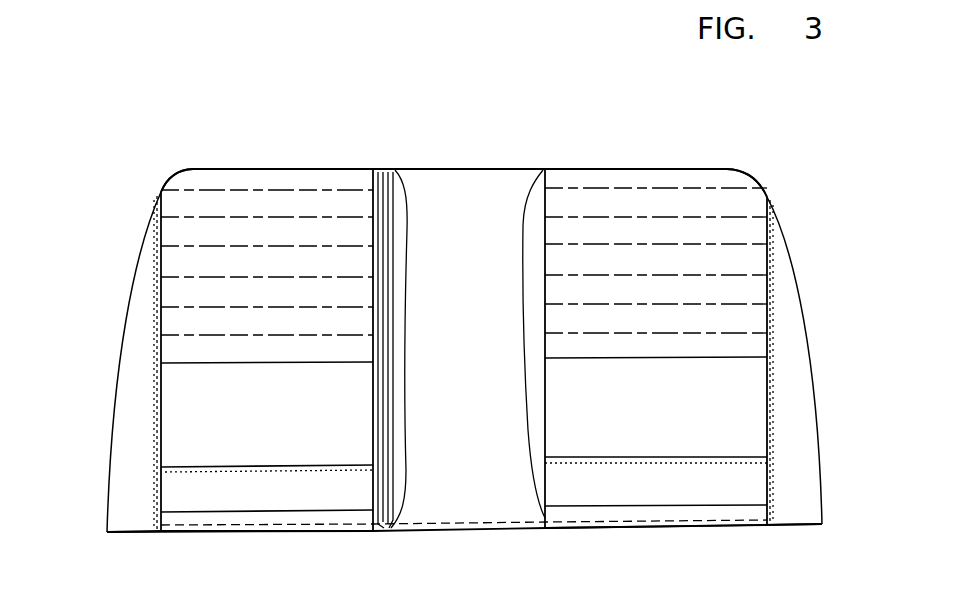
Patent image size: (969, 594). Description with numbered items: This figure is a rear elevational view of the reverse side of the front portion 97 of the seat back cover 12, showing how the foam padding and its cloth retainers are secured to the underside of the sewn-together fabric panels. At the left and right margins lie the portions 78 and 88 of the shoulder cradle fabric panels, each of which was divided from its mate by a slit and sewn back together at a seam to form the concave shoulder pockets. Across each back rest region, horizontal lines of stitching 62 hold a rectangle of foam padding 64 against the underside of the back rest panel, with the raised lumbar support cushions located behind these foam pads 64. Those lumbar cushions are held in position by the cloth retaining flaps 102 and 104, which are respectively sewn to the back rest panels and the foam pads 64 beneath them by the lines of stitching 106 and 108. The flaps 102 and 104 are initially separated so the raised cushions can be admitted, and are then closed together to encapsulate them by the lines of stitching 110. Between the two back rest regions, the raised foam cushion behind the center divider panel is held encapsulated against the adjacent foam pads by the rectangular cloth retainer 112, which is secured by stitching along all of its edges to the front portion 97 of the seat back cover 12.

The seat back cover 12 is at (567, 157).
The horizontal lines of stitching 62 is at (268, 216).
The rectangle of foam padding 64 is at (176, 206).
The portion of fabric panel 78 is at (800, 447).
The portion of fabric panel 88 is at (125, 443).
The front portion 97 is at (708, 166).
The cloth retaining flap 102 is at (200, 400).
The cloth retaining flap 104 is at (178, 487).
The line of stitching 106 is at (186, 363).
The line of stitching 108 is at (215, 512).
The lines of stitching 110 is at (290, 475).
The rectangular cloth retainer 112 is at (471, 225).